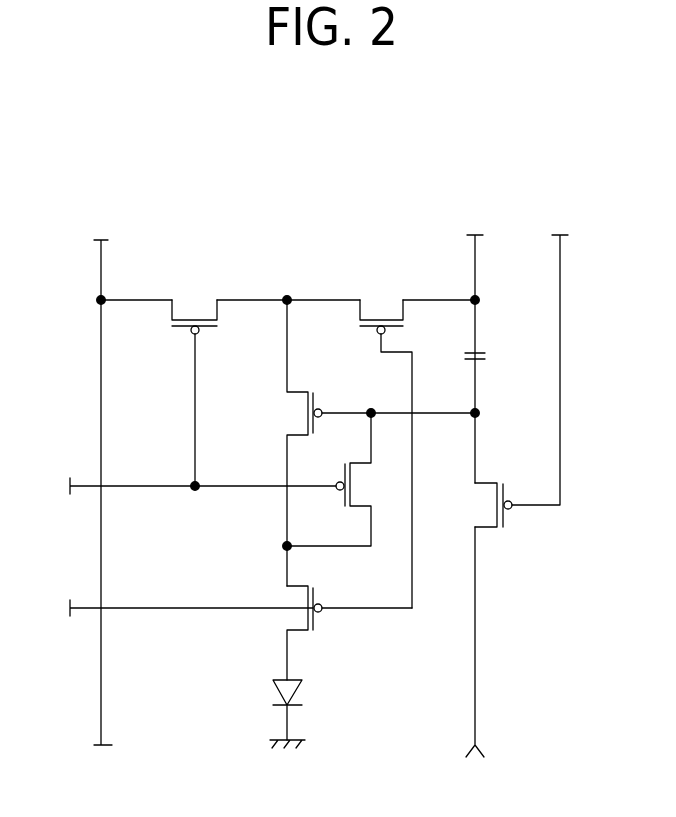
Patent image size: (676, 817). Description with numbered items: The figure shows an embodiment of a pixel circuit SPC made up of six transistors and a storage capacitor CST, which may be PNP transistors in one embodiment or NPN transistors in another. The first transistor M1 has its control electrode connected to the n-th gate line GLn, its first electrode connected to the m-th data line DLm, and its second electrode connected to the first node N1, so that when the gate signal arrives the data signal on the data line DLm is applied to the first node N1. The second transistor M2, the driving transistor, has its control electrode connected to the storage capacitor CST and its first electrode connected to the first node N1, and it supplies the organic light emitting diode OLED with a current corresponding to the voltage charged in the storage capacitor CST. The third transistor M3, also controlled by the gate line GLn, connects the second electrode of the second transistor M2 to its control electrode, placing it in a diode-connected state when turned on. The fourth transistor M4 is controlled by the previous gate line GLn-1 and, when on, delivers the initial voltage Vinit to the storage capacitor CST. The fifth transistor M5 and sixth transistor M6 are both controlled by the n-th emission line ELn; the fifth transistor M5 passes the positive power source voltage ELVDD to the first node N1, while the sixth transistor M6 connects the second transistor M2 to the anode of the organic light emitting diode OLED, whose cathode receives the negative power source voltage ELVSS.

The pixel circuit SPC is at (297, 205).
The m-th data line DLm is at (100, 477).
The positive power source voltage ELVDD is at (471, 346).
The (n−1)-th gate line GLn-1 is at (551, 357).
The first node N1 is at (286, 288).
The first transistor M1 is at (194, 387).
The fifth transistor M5 is at (386, 448).
The storage capacitor CST is at (496, 356).
The second transistor M2 is at (377, 443).
The third transistor M3 is at (333, 481).
The n-th gate line GLn is at (179, 488).
The fourth transistor M4 is at (488, 505).
The initial voltage Vinit is at (475, 657).
The n-th emission line ELn is at (168, 612).
The sixth transistor M6 is at (334, 632).
The organic light emitting diode OLED is at (315, 710).
The negative power source voltage ELVSS is at (288, 758).